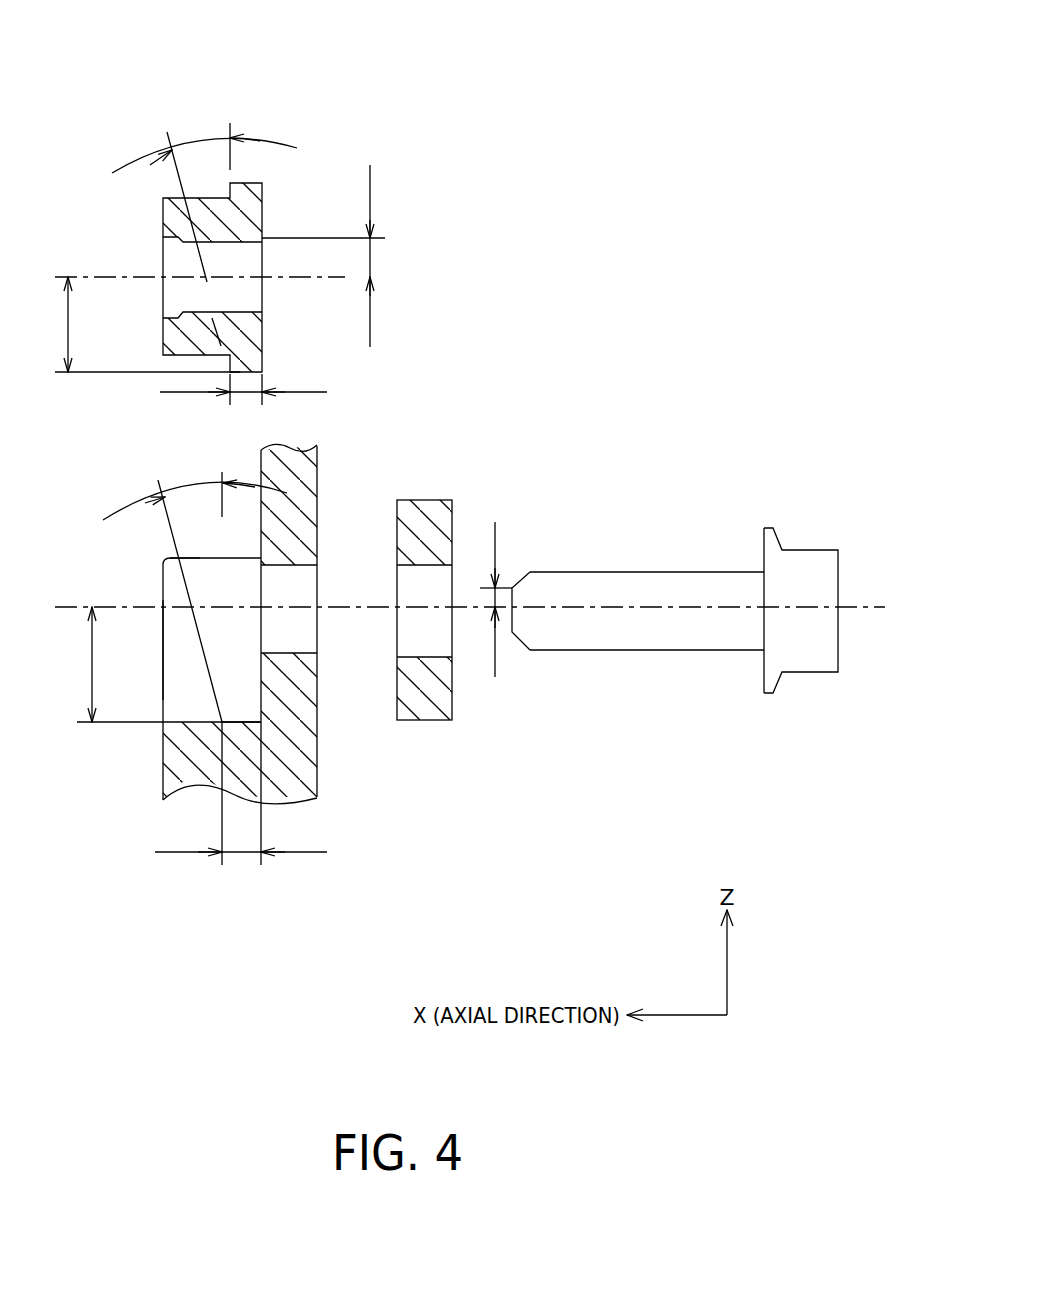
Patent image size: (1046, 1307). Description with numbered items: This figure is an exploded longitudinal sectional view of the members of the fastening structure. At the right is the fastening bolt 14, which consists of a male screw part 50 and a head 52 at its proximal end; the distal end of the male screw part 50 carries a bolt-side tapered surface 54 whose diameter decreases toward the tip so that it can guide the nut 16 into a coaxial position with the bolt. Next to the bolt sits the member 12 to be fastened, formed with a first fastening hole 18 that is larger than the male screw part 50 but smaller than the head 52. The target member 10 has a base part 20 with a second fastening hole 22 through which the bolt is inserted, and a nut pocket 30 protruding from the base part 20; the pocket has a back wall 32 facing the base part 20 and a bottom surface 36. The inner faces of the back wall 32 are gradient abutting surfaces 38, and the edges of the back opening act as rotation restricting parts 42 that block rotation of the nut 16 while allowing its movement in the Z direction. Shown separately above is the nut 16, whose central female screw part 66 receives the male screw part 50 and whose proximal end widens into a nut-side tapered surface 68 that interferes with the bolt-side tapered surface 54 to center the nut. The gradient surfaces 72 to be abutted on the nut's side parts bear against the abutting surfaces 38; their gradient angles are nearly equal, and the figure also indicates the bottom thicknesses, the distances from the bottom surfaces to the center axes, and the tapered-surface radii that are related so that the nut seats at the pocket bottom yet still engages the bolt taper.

The target member 10 is at (255, 691).
The member to be fastened 12 is at (454, 570).
The fastening bolt 14 is at (675, 592).
The nut 16 is at (210, 229).
The first fastening hole 18 is at (437, 645).
The base part 20 is at (337, 620).
The second fastening hole 22 is at (300, 575).
The nut pocket 30 is at (211, 642).
The back wall 32 is at (170, 588).
The bottom surface 36 is at (245, 722).
The abutting surfaces 38 is at (193, 588).
The rotation restricting parts 42 is at (183, 620).
The male screw part 50 is at (622, 572).
The head 52 is at (812, 673).
The bolt-side tapered surface 54 is at (520, 573).
The female screw part 66 is at (178, 250).
The nut-side tapered surface 68 is at (254, 312).
The surfaces to be abutted 72 is at (207, 282).